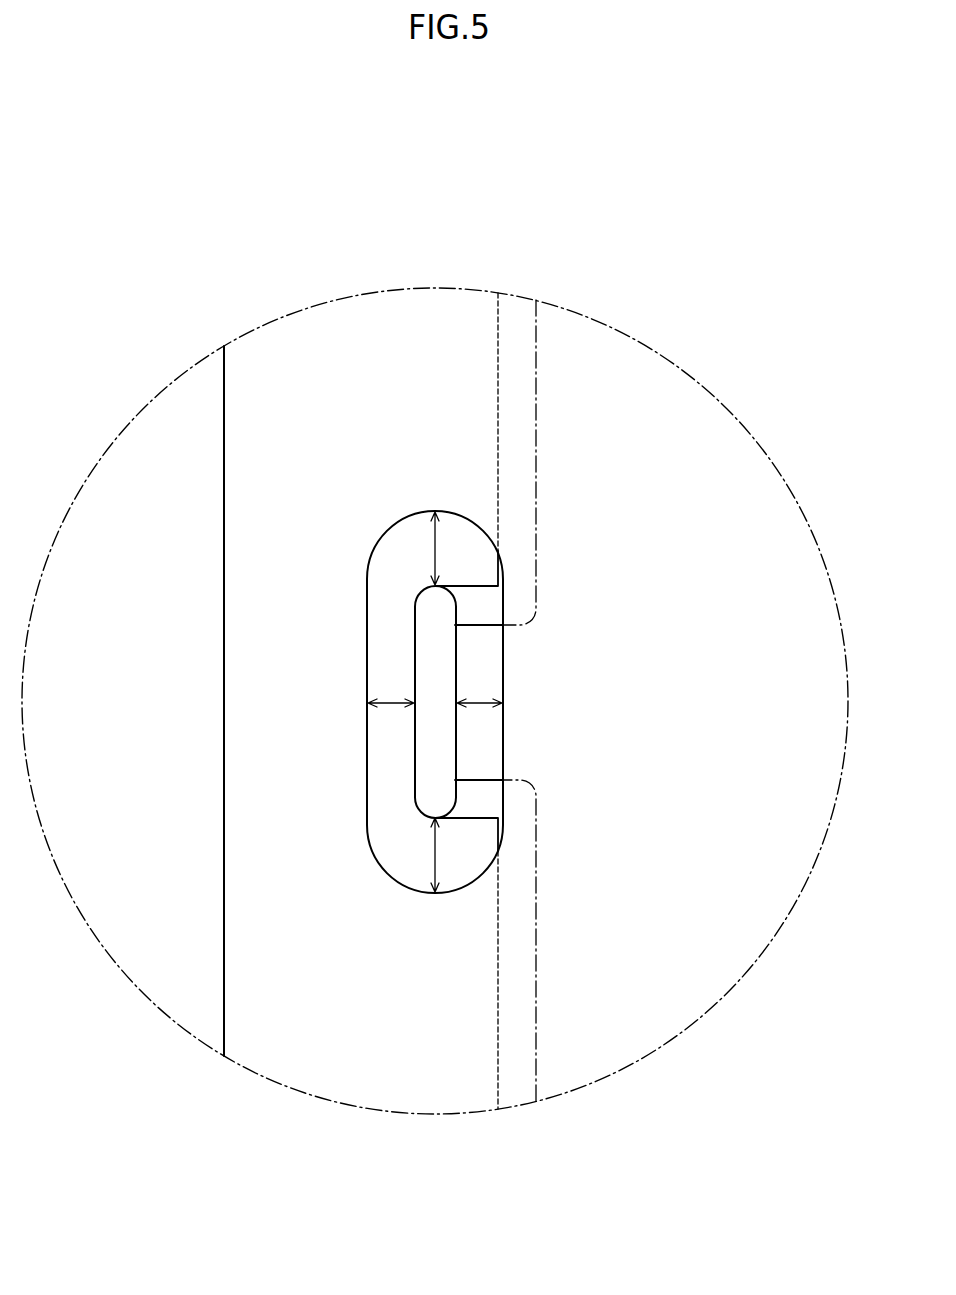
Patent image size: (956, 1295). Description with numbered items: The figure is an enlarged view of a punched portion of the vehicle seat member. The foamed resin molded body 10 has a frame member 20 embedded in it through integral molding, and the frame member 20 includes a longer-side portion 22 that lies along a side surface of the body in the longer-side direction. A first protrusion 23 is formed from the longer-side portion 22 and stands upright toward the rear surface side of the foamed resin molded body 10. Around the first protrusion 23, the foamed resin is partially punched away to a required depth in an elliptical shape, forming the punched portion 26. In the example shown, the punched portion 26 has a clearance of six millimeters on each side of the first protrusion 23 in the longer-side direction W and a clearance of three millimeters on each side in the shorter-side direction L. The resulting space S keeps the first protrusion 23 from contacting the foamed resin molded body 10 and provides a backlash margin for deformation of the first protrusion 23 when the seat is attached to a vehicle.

The foamed resin molded body 10 is at (247, 951).
The frame member 20 is at (517, 355).
The longer-side portion 22 is at (505, 998).
The first protrusion 23 is at (432, 755).
The punched portion 26 is at (368, 606).
The space S is at (392, 826).